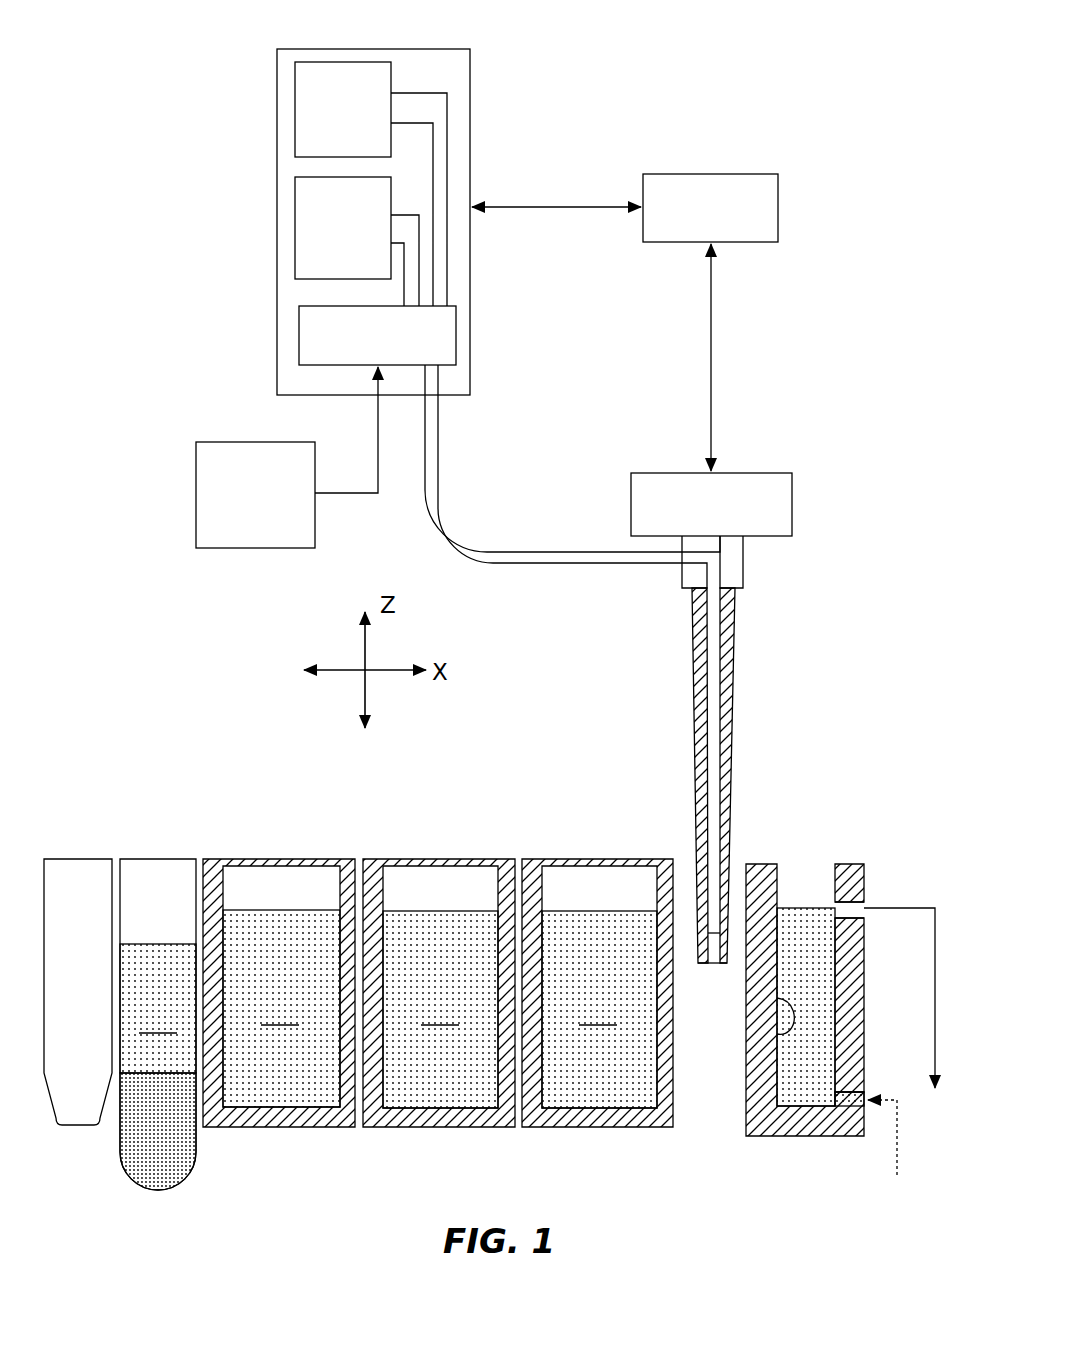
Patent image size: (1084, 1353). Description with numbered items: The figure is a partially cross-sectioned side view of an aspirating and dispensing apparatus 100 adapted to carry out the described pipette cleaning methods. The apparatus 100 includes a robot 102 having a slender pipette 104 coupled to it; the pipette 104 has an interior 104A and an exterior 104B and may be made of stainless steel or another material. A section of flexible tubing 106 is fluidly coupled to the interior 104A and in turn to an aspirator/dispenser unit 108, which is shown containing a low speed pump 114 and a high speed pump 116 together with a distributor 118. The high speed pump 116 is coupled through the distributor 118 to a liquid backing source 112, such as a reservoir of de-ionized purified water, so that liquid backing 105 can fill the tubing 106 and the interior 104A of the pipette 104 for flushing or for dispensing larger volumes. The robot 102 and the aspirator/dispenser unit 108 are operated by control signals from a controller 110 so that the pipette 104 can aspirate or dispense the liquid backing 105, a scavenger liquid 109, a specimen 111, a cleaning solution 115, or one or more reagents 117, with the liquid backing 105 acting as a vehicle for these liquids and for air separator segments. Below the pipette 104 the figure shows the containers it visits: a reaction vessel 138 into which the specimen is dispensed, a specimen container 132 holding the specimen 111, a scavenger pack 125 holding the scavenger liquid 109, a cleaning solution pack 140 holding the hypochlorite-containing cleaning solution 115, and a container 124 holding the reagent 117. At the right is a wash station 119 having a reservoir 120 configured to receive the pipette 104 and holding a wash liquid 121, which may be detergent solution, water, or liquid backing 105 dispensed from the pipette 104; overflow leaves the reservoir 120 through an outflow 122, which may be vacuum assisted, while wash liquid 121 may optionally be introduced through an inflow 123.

The aspirating and dispensing apparatus 100 is at (676, 118).
The robot 102 is at (750, 473).
The pipette 104 is at (697, 775).
The interior 104A is at (706, 732).
The exterior 104B is at (692, 660).
The liquid backing 105 is at (712, 789).
The tubing 106 is at (584, 568).
The aspirator/dispenser unit 108 is at (381, 46).
The scavenger liquid 109 is at (281, 1008).
The controller 110 is at (778, 207).
The specimen 111 is at (158, 1067).
The liquid backing source 112 is at (251, 441).
The low speed pump 114 is at (295, 100).
The cleaning solution 115 is at (440, 1009).
The high speed pump 116 is at (295, 228).
The reagent 117 is at (599, 1009).
The distributor 118 is at (299, 332).
The wash station 119 is at (824, 996).
The reservoir 120 is at (777, 1032).
The wash liquid 121 is at (808, 943).
The outflow 122 is at (932, 968).
The inflow 123 is at (900, 1140).
The reagent container 124 is at (597, 963).
The scavenger pack 125 is at (281, 963).
The specimen container 132 is at (173, 999).
The reaction vessel 138 is at (77, 856).
The cleaning solution pack 140 is at (441, 963).